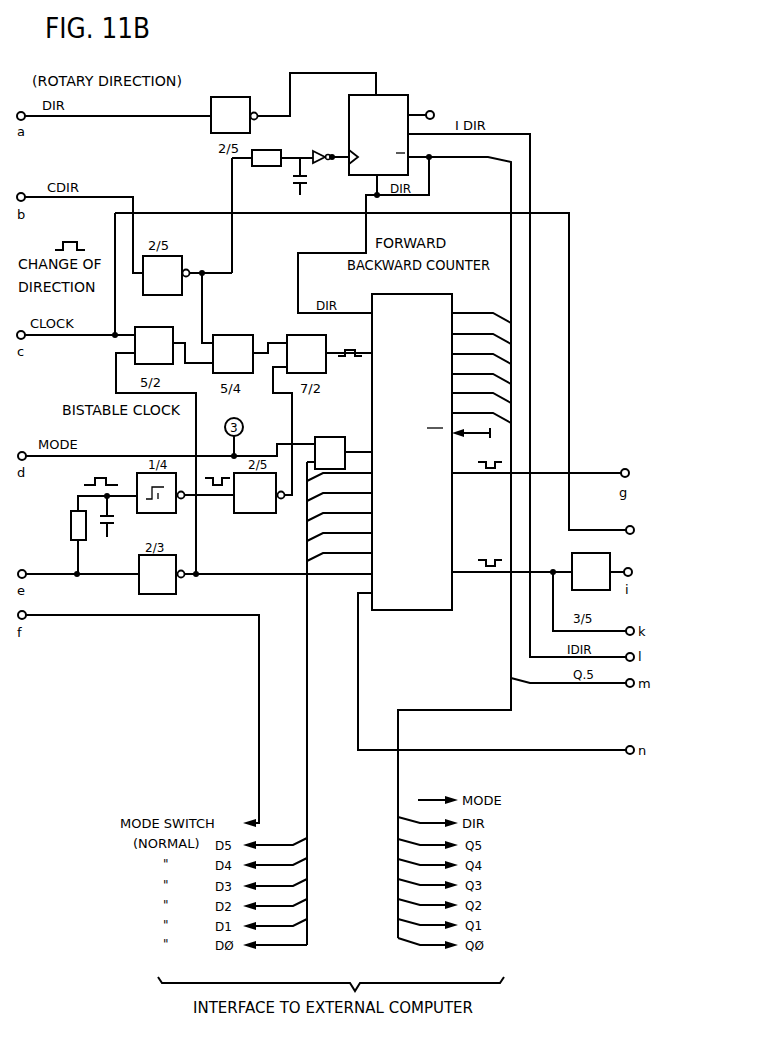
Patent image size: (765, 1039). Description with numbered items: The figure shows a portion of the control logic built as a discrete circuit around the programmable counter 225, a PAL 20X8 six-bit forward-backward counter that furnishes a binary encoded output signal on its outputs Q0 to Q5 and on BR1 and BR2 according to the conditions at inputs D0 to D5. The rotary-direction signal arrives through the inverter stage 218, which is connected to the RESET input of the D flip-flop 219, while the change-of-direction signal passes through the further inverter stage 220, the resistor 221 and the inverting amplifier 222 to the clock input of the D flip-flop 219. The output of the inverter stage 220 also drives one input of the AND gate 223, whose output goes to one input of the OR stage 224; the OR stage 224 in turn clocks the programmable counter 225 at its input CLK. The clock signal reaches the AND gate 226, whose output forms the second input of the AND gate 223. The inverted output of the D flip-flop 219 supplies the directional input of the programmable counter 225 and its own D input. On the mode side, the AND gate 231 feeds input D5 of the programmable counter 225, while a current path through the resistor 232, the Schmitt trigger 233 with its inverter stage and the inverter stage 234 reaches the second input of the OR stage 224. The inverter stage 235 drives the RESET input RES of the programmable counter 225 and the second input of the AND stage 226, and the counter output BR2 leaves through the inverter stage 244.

The inverter stage 218 is at (225, 97).
The D flip-flop 219 is at (349, 126).
The further inverter stage 220 is at (176, 258).
The resistor 221 is at (262, 166).
The inverting amplifier 222 is at (322, 151).
The AND gate 223 is at (232, 335).
The OR stage 224 is at (320, 341).
The programmable counter 225 is at (384, 399).
The AND gate 226 is at (147, 327).
The AND gate 231 is at (333, 437).
The resistor 232 is at (71, 518).
The Schmitt trigger 233 is at (165, 513).
The inverter stage 234 is at (258, 513).
The inverter stage 235 is at (170, 594).
The inverter stage 244 is at (600, 590).